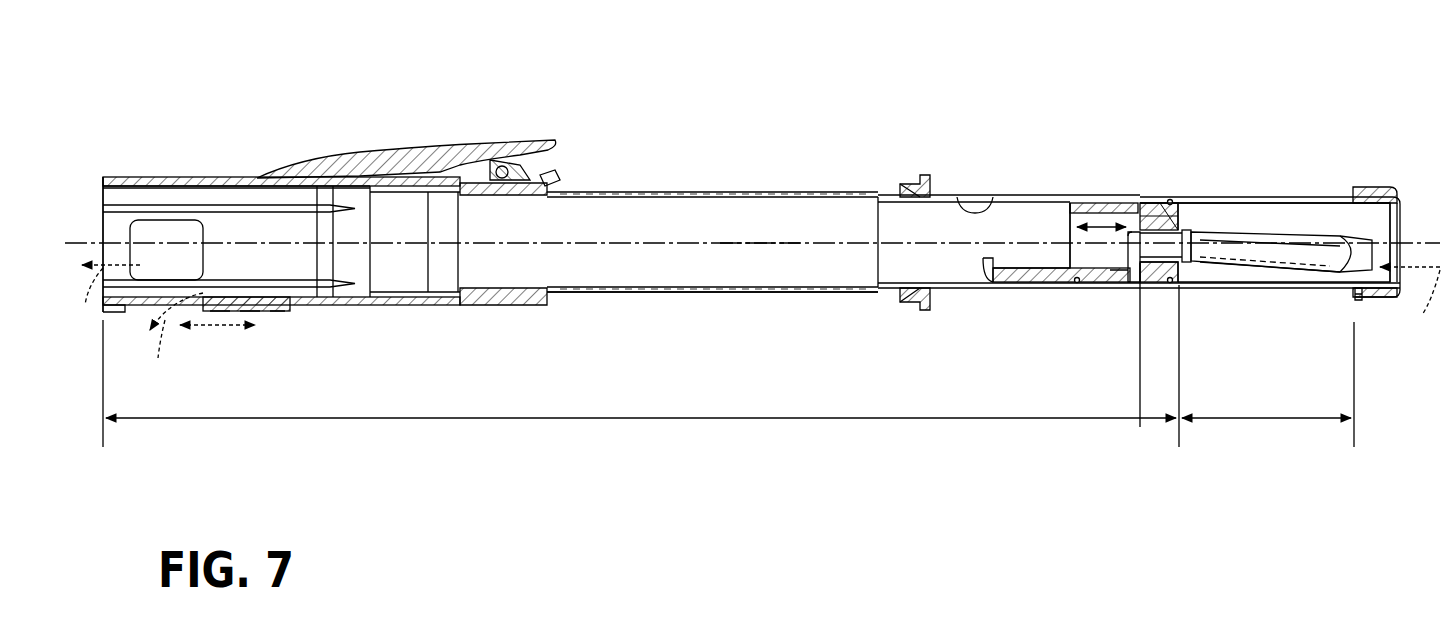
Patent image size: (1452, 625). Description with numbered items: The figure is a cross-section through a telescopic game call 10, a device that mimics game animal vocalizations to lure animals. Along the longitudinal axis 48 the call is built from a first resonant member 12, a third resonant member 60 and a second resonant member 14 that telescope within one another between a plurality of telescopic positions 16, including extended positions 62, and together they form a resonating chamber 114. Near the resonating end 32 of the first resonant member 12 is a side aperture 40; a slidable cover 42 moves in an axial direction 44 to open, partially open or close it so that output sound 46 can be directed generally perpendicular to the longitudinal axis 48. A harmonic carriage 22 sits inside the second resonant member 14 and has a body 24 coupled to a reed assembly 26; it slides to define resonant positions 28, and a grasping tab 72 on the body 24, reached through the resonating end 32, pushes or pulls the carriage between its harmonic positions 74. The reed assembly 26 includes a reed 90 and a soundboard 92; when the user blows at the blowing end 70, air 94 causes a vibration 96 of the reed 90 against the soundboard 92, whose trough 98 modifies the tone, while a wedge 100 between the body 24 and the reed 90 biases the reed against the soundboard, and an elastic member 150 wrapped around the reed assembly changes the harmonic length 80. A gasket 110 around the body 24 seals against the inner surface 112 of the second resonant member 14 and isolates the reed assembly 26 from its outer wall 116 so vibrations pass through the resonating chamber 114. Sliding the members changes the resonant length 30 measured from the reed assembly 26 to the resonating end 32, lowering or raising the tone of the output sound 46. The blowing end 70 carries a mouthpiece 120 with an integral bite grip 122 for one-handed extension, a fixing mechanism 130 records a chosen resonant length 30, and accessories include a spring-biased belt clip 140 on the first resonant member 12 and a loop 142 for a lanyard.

The telescopic game call 10 is at (717, 152).
The first resonant member 12 is at (212, 175).
The second resonant member 14 is at (1318, 194).
The telescopic positions 16 is at (996, 190).
The harmonic carriage 22 is at (1136, 196).
The body 24 is at (1028, 285).
The reed assembly 26 is at (1213, 200).
The resonant positions 28 is at (1098, 190).
The resonant length 30 is at (645, 418).
The resonating end 32 is at (103, 188).
The side aperture 40 is at (160, 222).
The slidable cover 42 is at (268, 312).
The axial direction 44 is at (205, 328).
The output sound 46 is at (135, 324).
The longitudinal axis 48 is at (763, 243).
The third resonant member 60 is at (615, 180).
The extended positions 62 is at (921, 152).
The blowing end 70 is at (1405, 200).
The grasping tab 72 is at (975, 265).
The harmonic positions 74 is at (1098, 235).
The harmonic length 80 is at (1250, 418).
The reed 90 is at (1303, 232).
The soundboard 92 is at (1297, 272).
The air 94 is at (1410, 302).
The vibration 96 is at (1367, 200).
The trough 98 is at (1243, 264).
The wedge 100 is at (1160, 200).
The gasket 110 is at (1078, 197).
The inner surface 112 is at (960, 197).
The resonating chamber 114 is at (567, 292).
The outer wall 116 is at (1245, 200).
The mouthpiece 120 is at (1380, 200).
The bite grip 122 is at (1380, 298).
The fixing mechanism 130 is at (895, 182).
The belt clip 140 is at (427, 147).
The loop 142 is at (1352, 302).
The elastic member 150 is at (1192, 200).